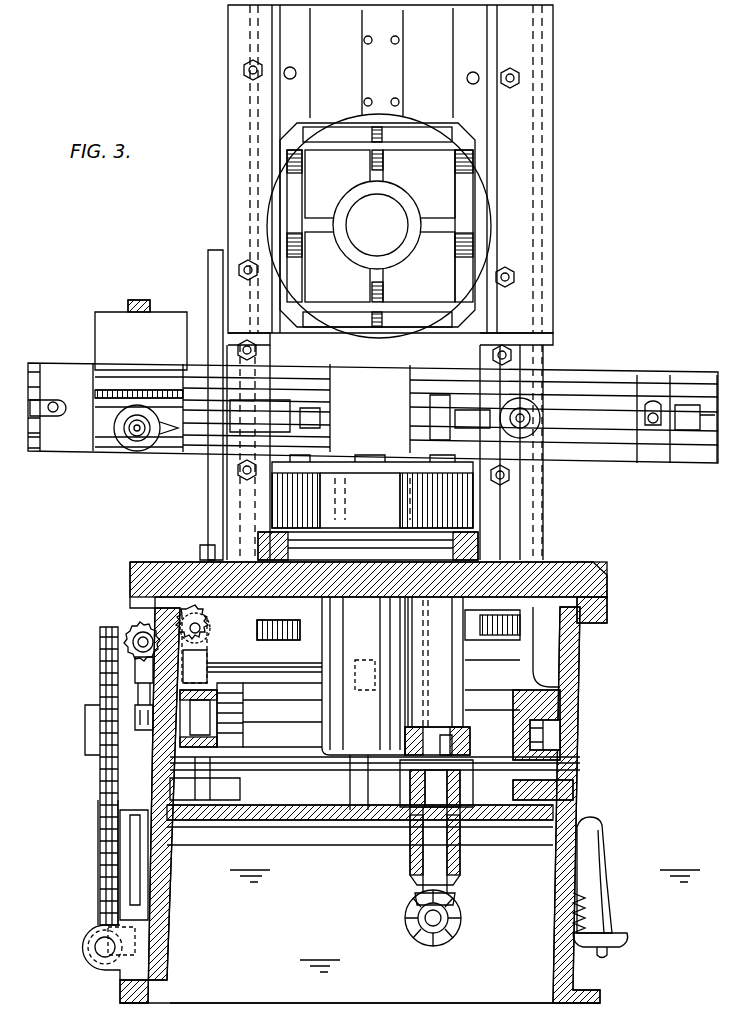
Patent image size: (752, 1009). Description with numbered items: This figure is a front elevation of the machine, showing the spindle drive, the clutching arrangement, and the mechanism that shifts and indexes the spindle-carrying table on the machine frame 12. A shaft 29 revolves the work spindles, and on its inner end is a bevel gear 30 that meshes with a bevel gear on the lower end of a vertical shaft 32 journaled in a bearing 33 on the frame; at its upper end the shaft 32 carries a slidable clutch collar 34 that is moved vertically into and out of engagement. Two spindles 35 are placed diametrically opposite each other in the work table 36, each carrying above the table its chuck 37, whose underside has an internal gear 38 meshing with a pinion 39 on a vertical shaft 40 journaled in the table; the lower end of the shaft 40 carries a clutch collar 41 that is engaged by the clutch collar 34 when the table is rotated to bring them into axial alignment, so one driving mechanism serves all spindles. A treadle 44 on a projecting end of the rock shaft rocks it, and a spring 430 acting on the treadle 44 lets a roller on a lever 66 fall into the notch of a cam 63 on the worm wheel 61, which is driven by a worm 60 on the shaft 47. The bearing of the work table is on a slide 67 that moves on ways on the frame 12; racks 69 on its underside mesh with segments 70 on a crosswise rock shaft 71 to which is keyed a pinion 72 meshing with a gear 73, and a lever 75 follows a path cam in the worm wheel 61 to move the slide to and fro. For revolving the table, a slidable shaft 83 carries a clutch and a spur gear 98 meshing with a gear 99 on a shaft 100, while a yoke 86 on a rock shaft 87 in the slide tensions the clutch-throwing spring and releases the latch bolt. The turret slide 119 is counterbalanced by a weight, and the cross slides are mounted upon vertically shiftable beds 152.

The turret slide 119 is at (390, 175).
The vertically shiftable beds 152 is at (373, 381).
The chuck 37 is at (372, 491).
The internal gear 38 is at (258, 548).
The pinion 39 is at (368, 547).
The work table 36 is at (130, 573).
The slide 67 is at (582, 665).
The rock shaft 71 is at (283, 768).
The spindle 35 is at (360, 755).
The vertical shaft 40 is at (465, 712).
The clutch collar 41 is at (462, 745).
The slidable clutch collar 34 is at (475, 800).
The vertical shaft 32 is at (410, 868).
The bearing 33 is at (465, 868).
The bevel gear 30 is at (443, 919).
The shaft 29 is at (430, 925).
The treadle 44 is at (612, 905).
The spring 430 is at (573, 918).
The slidable shaft 83 is at (215, 618).
The spur gear 98 is at (218, 628).
The yoke 86 is at (208, 662).
The rock shaft 87 is at (281, 668).
The gear 99 is at (125, 630).
The shaft 100 is at (130, 646).
The lever 75 is at (85, 728).
The gear 73 is at (242, 730).
The racks 69 is at (243, 708).
The segments 70 is at (195, 775).
The pinion 72 is at (240, 778).
The worm wheel 61 is at (98, 850).
The cam 63 is at (120, 860).
The lever 66 is at (130, 884).
The worm 60 is at (90, 935).
The shaft 47 is at (90, 948).
The machine frame 12 is at (361, 981).